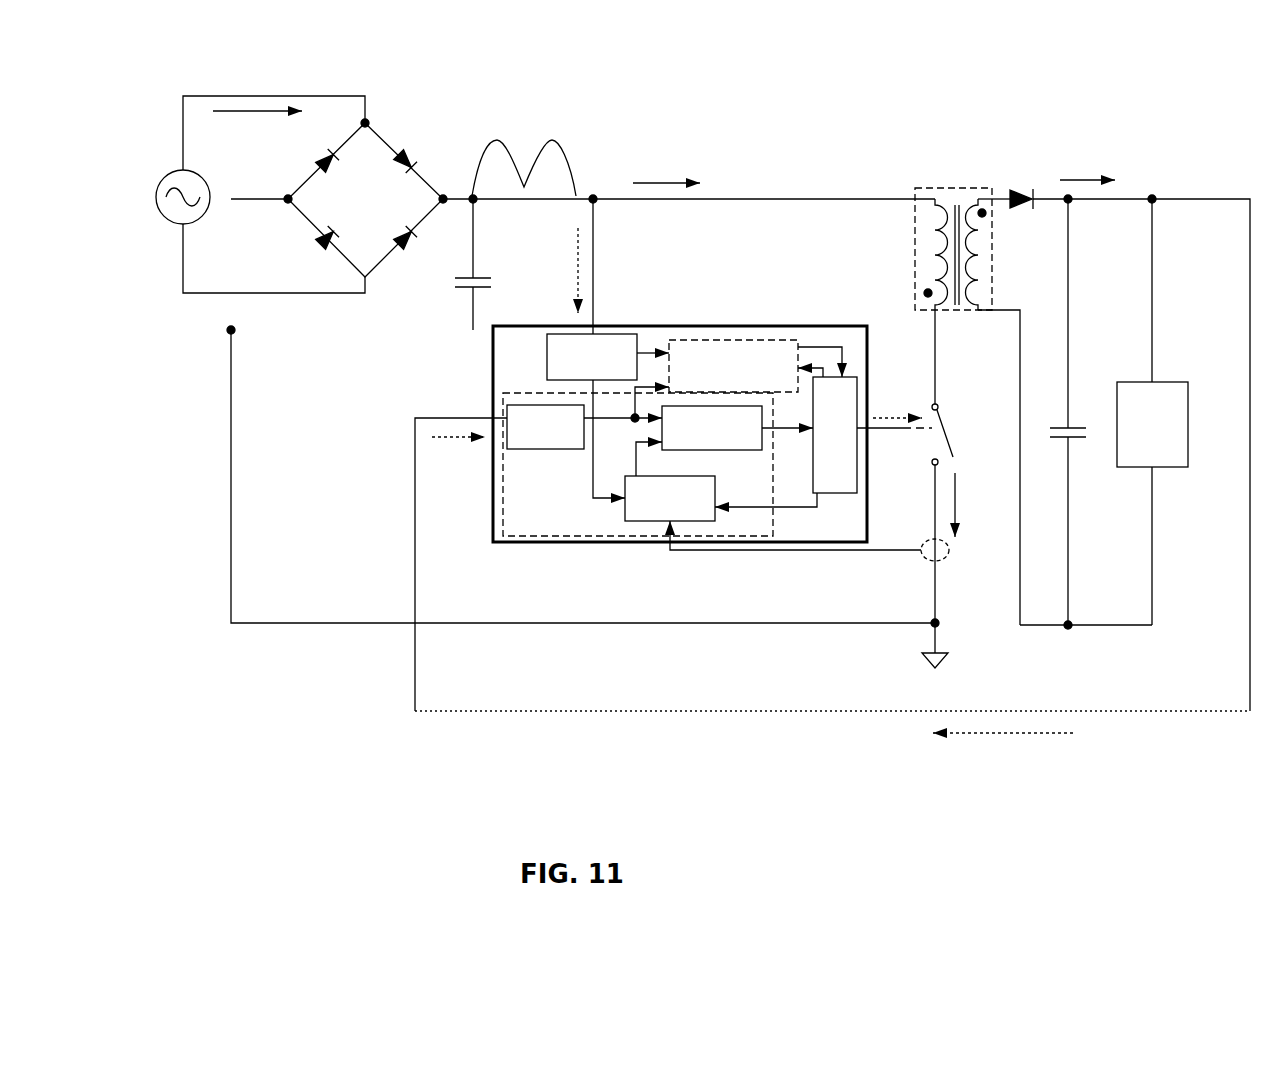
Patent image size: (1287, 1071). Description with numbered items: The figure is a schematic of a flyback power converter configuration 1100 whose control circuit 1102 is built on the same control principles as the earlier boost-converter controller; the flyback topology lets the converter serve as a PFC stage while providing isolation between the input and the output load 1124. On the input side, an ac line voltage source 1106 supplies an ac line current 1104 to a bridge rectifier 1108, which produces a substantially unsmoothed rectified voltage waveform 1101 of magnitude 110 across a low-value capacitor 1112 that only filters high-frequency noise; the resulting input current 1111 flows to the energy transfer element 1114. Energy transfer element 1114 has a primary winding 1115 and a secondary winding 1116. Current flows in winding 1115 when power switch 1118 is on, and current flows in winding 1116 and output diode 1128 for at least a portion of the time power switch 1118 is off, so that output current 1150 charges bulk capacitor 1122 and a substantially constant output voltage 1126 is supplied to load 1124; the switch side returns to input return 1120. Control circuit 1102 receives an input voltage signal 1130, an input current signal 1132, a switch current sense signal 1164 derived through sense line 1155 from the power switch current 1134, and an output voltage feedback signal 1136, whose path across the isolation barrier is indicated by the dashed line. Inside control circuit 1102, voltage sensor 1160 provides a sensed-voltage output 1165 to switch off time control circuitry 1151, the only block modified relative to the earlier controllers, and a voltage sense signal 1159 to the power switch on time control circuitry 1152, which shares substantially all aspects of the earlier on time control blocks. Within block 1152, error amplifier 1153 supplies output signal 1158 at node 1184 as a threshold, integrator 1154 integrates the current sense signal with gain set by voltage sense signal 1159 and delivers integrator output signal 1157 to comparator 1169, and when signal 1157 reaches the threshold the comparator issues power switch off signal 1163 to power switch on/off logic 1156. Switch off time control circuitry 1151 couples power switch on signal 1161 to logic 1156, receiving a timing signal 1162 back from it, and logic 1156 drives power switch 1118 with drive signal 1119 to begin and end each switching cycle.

The flyback converter 1100 is at (795, 108).
The rectified input voltage waveform 1101 is at (558, 141).
The control circuit 1102 is at (750, 321).
The input current IG 1104 is at (254, 120).
The AC voltage source VG 1106 is at (173, 164).
The bridge rectifier 1108 is at (393, 133).
The dc input voltage V_IN 110 is at (366, 198).
The input current IIN 1111 is at (666, 162).
The input capacitor 1112 is at (443, 292).
The energy transfer element 1114 is at (951, 190).
The winding 1115 is at (920, 250).
The winding 1116 is at (985, 272).
The power switch 1118 is at (948, 412).
The switch control signal USW 1119 is at (884, 386).
The ground 1120 is at (926, 645).
The output capacitor C1 1122 is at (1093, 445).
The output load 1124 is at (1222, 376).
The output voltage node 1126 is at (1115, 376).
The output diode D1 1128 is at (1030, 178).
The input voltage sense signal UVIN 1130 is at (557, 294).
The input current sense signal UIIN 1132 is at (462, 450).
The switch current ISW 1134 is at (966, 505).
The feedback signal 1136 is at (984, 736).
The output current IOUT 1150 is at (1100, 166).
The switch off time control circuitry block 1151 is at (715, 341).
The power switch on time control circuitry 1152 is at (545, 540).
The error amplifier 1153 is at (541, 454).
The integrator 1154 is at (618, 531).
The switch current feedback line 1155 is at (803, 545).
The power switch on/off logic 1156 is at (855, 468).
The comparator 1157 is at (658, 462).
The integrator output 1158 is at (637, 452).
The error amplifier output 1159 is at (540, 452).
The Vin sensor 1160 is at (544, 358).
The switch off time control output 1161 is at (834, 348).
The power switch logic feedback 1162 is at (822, 365).
The comparator output 1163 is at (786, 436).
The switch current sensor 1164 is at (884, 556).
The Vin sensor output 1165 is at (655, 346).
The comparator output signal 1169 is at (744, 452).
The error amplifier output node 1184 is at (634, 417).